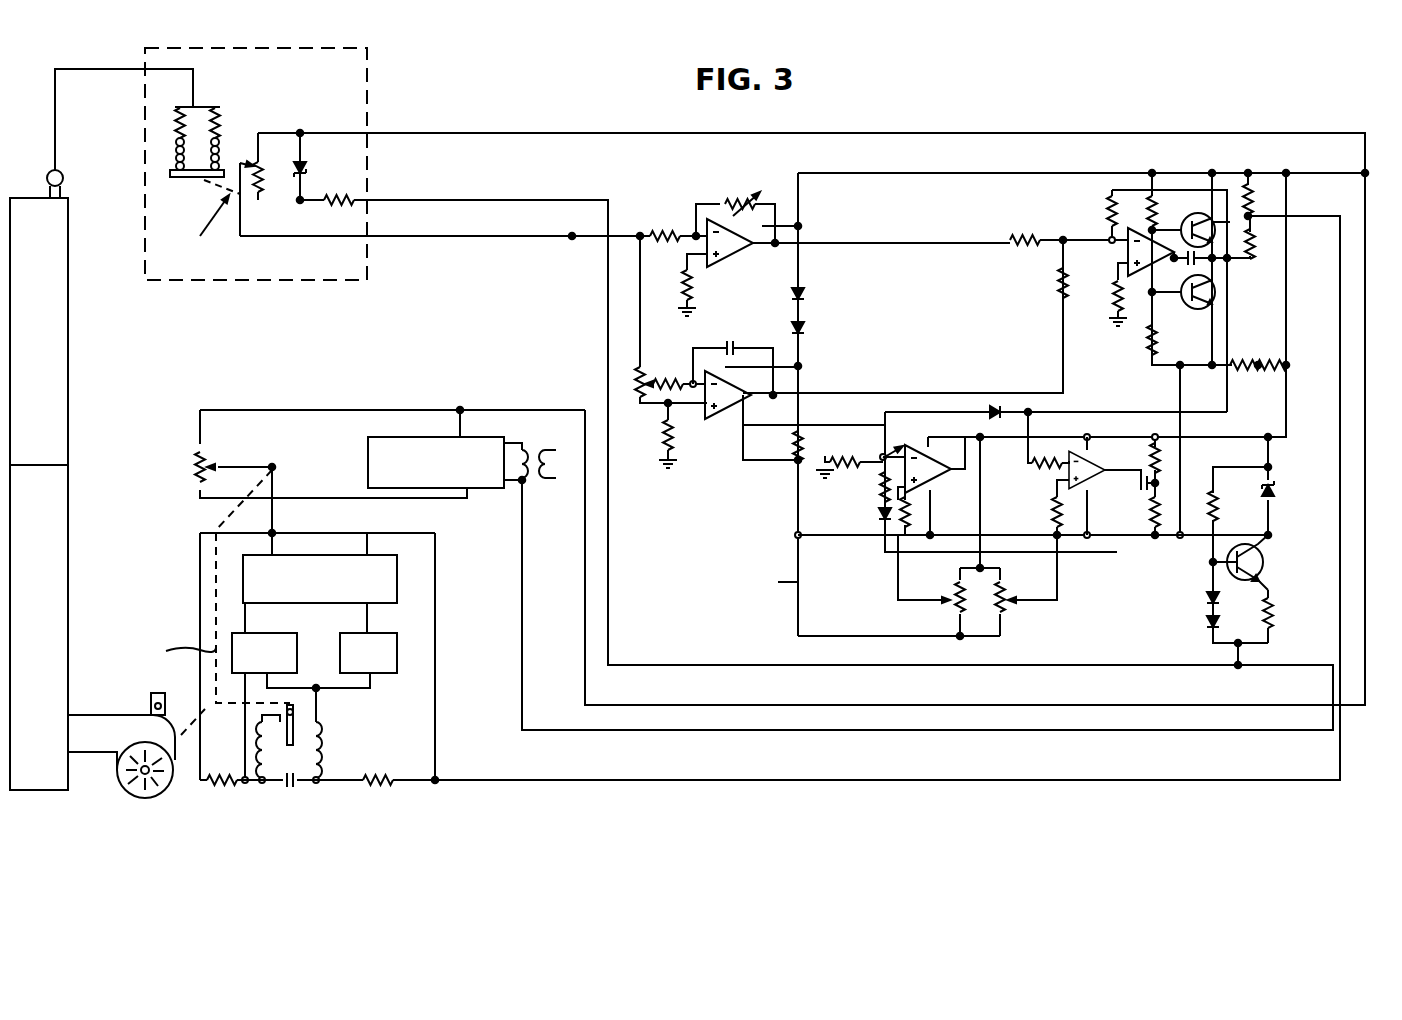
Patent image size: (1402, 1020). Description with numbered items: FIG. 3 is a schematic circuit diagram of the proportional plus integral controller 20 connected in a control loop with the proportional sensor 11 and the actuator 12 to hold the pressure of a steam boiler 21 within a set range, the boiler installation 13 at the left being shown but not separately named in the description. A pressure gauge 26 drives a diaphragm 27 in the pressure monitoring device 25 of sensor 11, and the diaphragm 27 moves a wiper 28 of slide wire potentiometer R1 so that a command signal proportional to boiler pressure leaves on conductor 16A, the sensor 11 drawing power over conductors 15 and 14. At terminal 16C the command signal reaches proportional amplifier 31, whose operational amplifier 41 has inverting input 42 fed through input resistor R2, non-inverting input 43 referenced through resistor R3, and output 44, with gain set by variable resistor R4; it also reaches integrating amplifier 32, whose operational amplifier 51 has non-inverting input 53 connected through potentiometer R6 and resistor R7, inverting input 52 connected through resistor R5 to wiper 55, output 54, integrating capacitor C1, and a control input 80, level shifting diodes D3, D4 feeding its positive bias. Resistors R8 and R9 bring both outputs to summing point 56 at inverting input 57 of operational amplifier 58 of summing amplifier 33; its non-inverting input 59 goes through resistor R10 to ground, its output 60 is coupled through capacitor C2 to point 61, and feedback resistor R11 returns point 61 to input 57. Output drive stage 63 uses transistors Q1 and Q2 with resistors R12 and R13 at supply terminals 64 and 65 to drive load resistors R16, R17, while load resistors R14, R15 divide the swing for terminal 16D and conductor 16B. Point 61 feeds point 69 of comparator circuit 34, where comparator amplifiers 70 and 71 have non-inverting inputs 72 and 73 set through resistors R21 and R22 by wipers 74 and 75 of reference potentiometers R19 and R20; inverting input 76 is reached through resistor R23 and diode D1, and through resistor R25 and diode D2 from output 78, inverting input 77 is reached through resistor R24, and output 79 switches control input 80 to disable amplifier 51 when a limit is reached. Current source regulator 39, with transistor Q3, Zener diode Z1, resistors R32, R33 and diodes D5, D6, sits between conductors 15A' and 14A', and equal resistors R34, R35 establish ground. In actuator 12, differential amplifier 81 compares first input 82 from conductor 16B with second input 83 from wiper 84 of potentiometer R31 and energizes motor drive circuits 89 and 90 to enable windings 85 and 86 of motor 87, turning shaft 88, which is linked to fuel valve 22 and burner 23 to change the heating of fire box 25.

The proportional sensor controller 11 is at (371, 98).
The actuator 12 is at (300, 792).
The boiler system 13 is at (92, 852).
The conductor 14 is at (538, 131).
The conductor 14A' is at (1083, 164).
The conductor 15 is at (540, 197).
The conductor 15A' is at (1195, 657).
The conductor 16A is at (558, 235).
The conductor 16B is at (1352, 217).
The terminal 16C is at (572, 240).
The terminal 16D is at (1262, 223).
The controller 20 is at (980, 827).
The steam boiler 21 is at (57, 381).
The fuel valve 22 is at (159, 683).
The burner 23 is at (146, 818).
The fire box 25 is at (299, 104).
The pressure gauge 26 is at (50, 170).
The pressure monitoring diaphragm 27 is at (228, 122).
The wiper 28 is at (252, 212).
The proportional amplifier 31 is at (668, 201).
The integrating amplifier 32 is at (663, 335).
The summing amplifier 33 is at (1090, 211).
The comparator circuit 34 is at (1111, 618).
The current source regulator circuit 39 is at (1312, 555).
The operational amplifier 41 is at (368, 456).
The inverting input 42 is at (717, 204).
The non-inverting input 43 is at (704, 258).
The output 44 is at (771, 247).
The operational amplifier 51 is at (732, 417).
The inverting input 52 is at (705, 364).
The non-inverting input 53 is at (680, 413).
The output 54 is at (903, 330).
The wiper 55 is at (645, 404).
The summing point 56 is at (1043, 256).
The inverting input 57 is at (1131, 254).
The operational amplifier 58 is at (1137, 307).
The non-inverting input 59 is at (1095, 265).
The output 60 is at (1172, 246).
The point 61 is at (1240, 262).
The output drive stage 63 is at (1204, 207).
The positive supply terminal 64 is at (1130, 241).
The negative supply terminal 65 is at (1160, 272).
The point 69 is at (1030, 412).
The comparator amplifier 70 is at (940, 470).
The comparator amplifier 71 is at (1092, 486).
The non-inverting input 72 is at (980, 505).
The non-inverting input 73 is at (1056, 482).
The wiper 74 is at (955, 598).
The wiper 75 is at (1005, 600).
The inverting input 76 is at (902, 443).
The inverting input 77 is at (1058, 440).
The output 78 is at (1131, 473).
The output 79 is at (954, 453).
The control input 80 is at (959, 479).
The differential amplifier 81 is at (320, 594).
The first input 82 is at (253, 625).
The second input 83 is at (291, 511).
The wiper 84 is at (234, 467).
The winding 85 is at (260, 745).
The winding 86 is at (322, 743).
The motor 87 is at (360, 766).
The motor shaft 88 is at (312, 722).
The motor drive circuit 89 is at (301, 708).
The motor drive circuit 90 is at (368, 653).
The slide wire potentiometer R1 is at (268, 171).
The input resistor R2 is at (675, 228).
The resistor R3 is at (682, 284).
The variable resistor R4 is at (753, 192).
The resistor R5 is at (676, 376).
The potentiometer R6 is at (647, 376).
The resistor R7 is at (663, 440).
The resistor R8 is at (1038, 233).
The resistor R9 is at (1057, 292).
The resistor R10 is at (1112, 294).
The feedback resistor R11 is at (1112, 195).
The resistor R12 is at (1156, 195).
The resistor R13 is at (1148, 332).
The load resistor R14 is at (1264, 252).
The load resistor R15 is at (1258, 185).
The load resistor R16 is at (1236, 367).
The load resistor R17 is at (1272, 362).
The reference potentiometer R19 is at (957, 614).
The reference potentiometer R20 is at (1001, 616).
The resistor R21 is at (916, 518).
The resistor R22 is at (1057, 524).
The resistor R23 is at (878, 450).
The resistor R24 is at (1048, 440).
The resistor R25 is at (880, 487).
The potentiometer R31 is at (198, 483).
The resistor R32 is at (1231, 526).
The resistor R33 is at (1277, 614).
The resistor R34 is at (1168, 464).
The resistor R35 is at (1141, 530).
The integrating capacitor C1 is at (749, 346).
The capacitor C2 is at (1210, 269).
The decoupling diode D1 is at (1000, 400).
The decoupling diode D2 is at (878, 516).
The level shifting diode D3 is at (806, 296).
The level shifting diode D4 is at (806, 330).
The diode D5 is at (1205, 604).
The diode D6 is at (1205, 630).
The transistor Q1 is at (1216, 236).
The transistor Q2 is at (1218, 296).
The transistor Q3 is at (1262, 566).
The Zener diode Z1 is at (1278, 486).